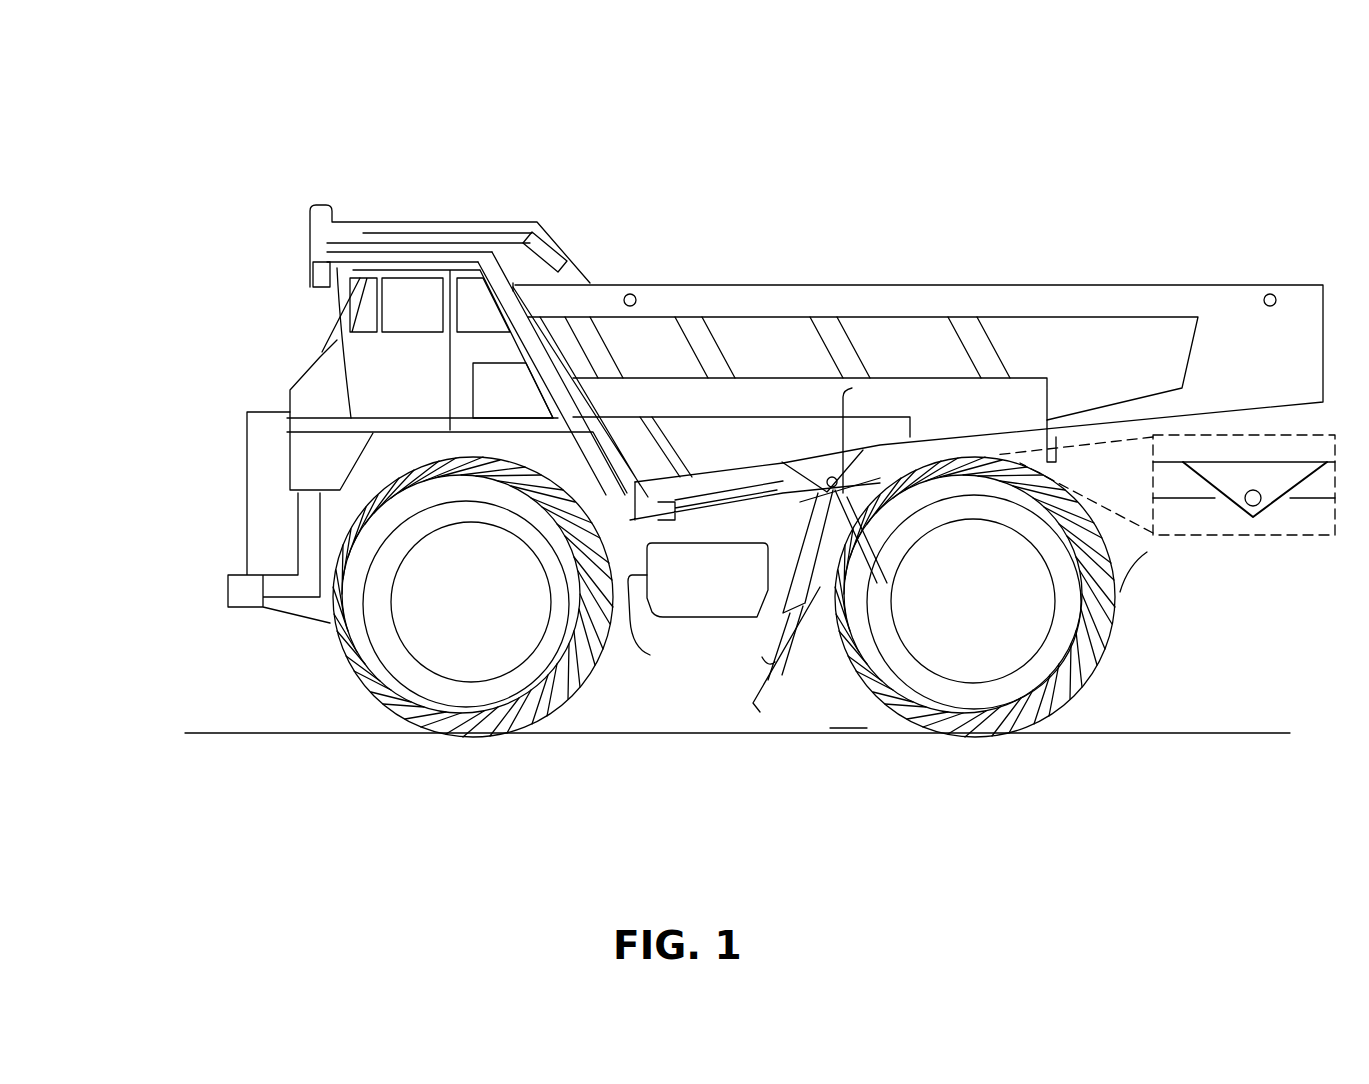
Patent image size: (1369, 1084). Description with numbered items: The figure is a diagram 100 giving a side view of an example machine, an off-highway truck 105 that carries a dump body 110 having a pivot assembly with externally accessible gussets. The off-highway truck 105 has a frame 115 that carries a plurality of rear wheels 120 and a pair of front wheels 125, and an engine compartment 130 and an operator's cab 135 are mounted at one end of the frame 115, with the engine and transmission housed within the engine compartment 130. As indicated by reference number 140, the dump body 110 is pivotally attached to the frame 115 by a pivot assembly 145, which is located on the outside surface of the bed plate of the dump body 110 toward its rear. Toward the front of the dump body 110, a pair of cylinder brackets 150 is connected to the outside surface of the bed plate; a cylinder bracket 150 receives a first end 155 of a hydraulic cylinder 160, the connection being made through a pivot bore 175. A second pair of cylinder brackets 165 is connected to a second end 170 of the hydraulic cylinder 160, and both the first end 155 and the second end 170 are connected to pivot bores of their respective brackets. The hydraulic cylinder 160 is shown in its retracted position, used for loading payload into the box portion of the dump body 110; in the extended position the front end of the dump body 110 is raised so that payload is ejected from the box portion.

The diagram 100 is at (168, 64).
The off-highway truck 105 is at (222, 274).
The dump body 110 is at (1020, 183).
The frame 115 is at (670, 618).
The rear wheels 120 is at (1180, 549).
The front wheels 125 is at (393, 657).
The engine compartment 130 is at (190, 435).
The operator's cab 135 is at (380, 382).
The reference number 140 is at (1272, 535).
The pivot assembly 145 is at (1272, 491).
The cylinder brackets 150 is at (815, 475).
The first end 155 is at (790, 517).
The hydraulic cylinder 160 is at (820, 605).
The second pair of cylinder brackets 165 is at (772, 619).
The second end 170 is at (760, 663).
The pivot bore 175 is at (853, 400).